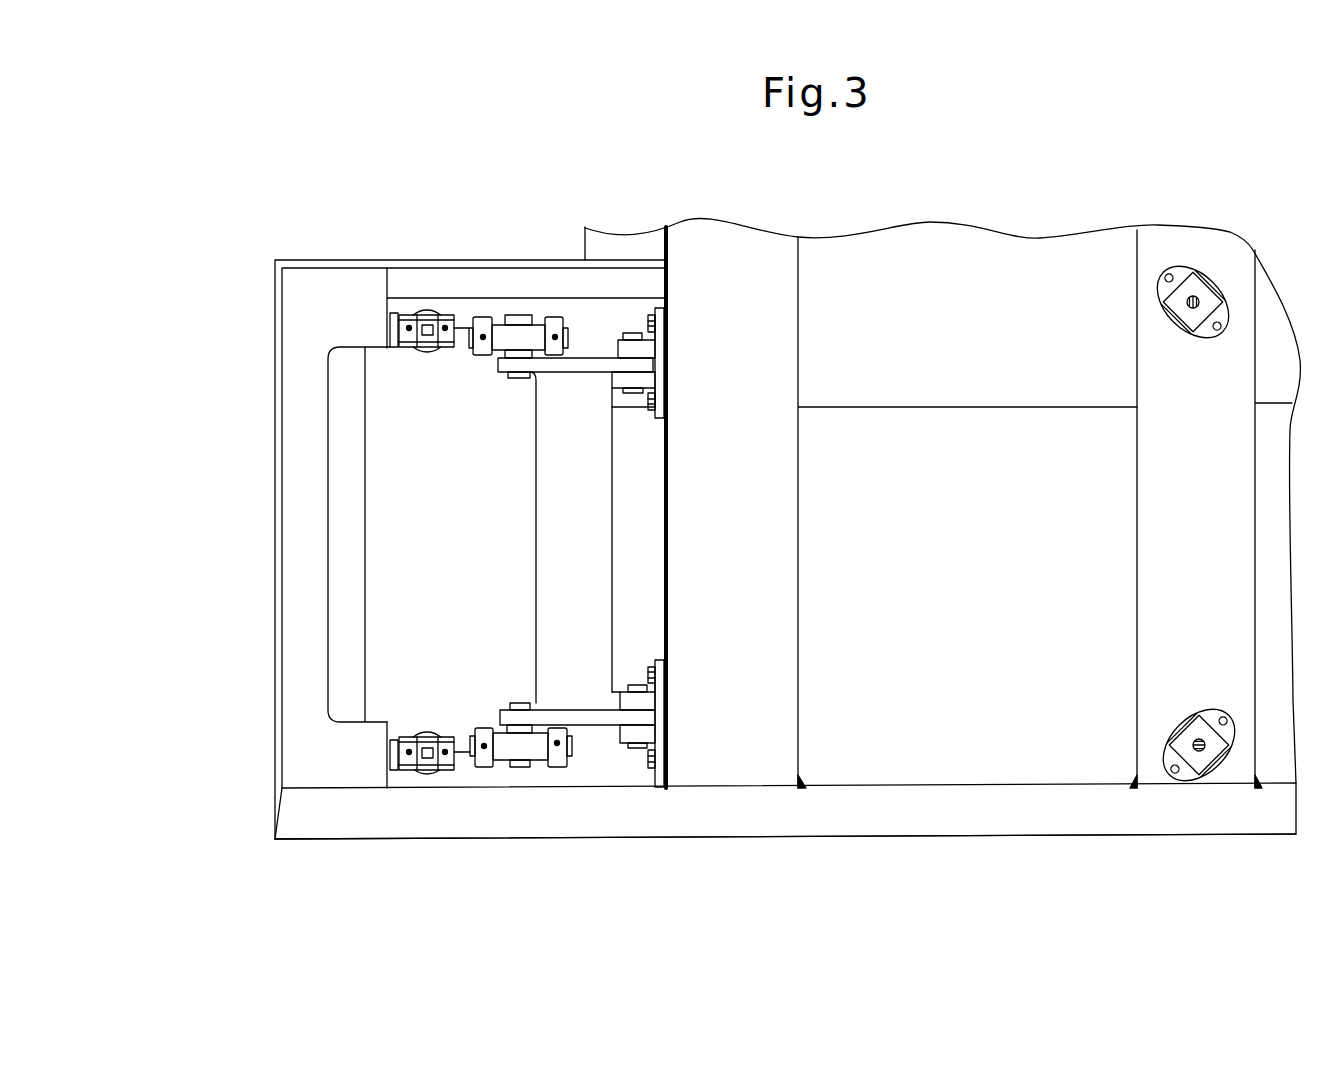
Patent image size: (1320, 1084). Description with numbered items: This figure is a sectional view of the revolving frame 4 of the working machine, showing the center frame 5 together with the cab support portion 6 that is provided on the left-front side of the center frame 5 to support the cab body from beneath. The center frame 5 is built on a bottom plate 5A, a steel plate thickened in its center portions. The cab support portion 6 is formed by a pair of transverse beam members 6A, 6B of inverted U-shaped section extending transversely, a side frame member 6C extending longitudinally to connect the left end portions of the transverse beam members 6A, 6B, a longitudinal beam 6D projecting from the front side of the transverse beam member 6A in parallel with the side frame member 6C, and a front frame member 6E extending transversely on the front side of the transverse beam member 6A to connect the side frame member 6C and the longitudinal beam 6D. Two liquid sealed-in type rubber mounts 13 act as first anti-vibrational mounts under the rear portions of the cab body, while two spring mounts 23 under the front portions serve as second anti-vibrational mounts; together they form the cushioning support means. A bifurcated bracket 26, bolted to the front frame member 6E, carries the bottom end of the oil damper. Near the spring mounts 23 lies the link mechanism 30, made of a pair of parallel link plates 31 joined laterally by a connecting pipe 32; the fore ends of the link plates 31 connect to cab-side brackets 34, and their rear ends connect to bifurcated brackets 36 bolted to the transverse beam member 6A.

The revolving frame 4 is at (915, 850).
The center frame 5 is at (1064, 228).
The bottom plate 5A is at (957, 267).
The cab support portion 6 is at (264, 562).
The transverse beam member 6A is at (690, 246).
The transverse beam member 6B is at (1164, 238).
The side frame member 6C is at (748, 815).
The longitudinal beam 6D is at (478, 278).
The front frame member 6E is at (310, 442).
The rubber mount 13 is at (1209, 262).
The spring mount 23 is at (414, 300).
The bifurcated bracket 26 is at (385, 320).
The link mechanism 30 is at (600, 742).
The link plate 31 is at (595, 363).
The connecting pipe 32 is at (602, 463).
The bracket 34 is at (537, 335).
The bifurcated bracket 36 is at (633, 345).